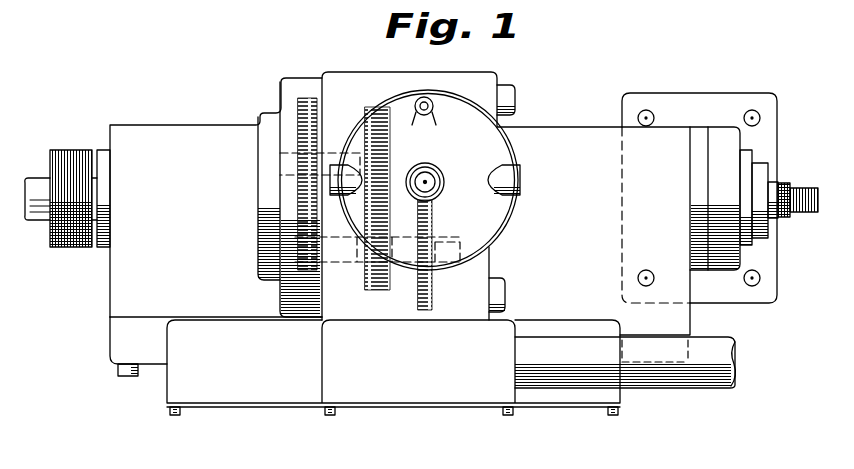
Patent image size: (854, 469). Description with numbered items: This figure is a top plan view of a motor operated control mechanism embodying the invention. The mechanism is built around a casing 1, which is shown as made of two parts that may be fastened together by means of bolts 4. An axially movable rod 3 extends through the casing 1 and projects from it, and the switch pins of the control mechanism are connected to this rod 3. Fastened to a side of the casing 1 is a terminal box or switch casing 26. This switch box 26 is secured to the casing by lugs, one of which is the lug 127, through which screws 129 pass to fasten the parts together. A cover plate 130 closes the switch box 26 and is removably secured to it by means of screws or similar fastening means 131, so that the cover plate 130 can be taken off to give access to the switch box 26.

The casing 1 is at (210, 145).
The axially movable rod 3 is at (775, 190).
The bolts 4 is at (508, 100).
The terminal box or switch casing 26 is at (267, 383).
The lug 127 is at (150, 350).
The screws 129 is at (136, 378).
The cover plate 130 is at (572, 404).
The screws or similar fastening means 131 is at (328, 414).